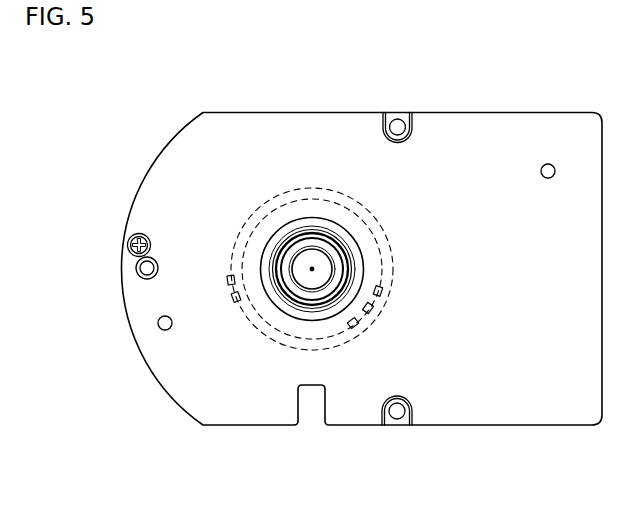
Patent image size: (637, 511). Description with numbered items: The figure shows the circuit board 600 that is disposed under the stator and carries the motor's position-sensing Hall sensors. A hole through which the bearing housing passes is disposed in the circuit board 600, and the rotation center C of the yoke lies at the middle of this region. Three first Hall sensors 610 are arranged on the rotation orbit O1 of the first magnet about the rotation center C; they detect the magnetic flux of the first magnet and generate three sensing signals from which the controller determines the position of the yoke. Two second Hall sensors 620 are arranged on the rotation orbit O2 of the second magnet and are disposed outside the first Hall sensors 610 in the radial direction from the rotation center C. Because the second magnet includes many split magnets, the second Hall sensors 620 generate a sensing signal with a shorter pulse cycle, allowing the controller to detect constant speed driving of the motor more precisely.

The circuit board 600 is at (230, 110).
The rotation center C is at (312, 269).
The rotation orbit of the first magnet O1 is at (247, 320).
The rotation orbit of the second magnet O2 is at (262, 322).
The second Hall sensor 620 is at (232, 297).
The first Hall sensor 610 is at (384, 293).